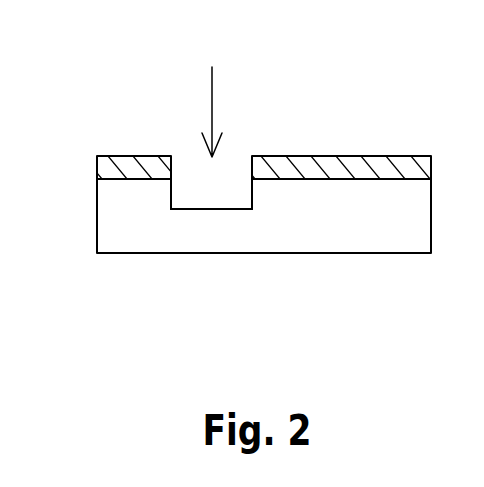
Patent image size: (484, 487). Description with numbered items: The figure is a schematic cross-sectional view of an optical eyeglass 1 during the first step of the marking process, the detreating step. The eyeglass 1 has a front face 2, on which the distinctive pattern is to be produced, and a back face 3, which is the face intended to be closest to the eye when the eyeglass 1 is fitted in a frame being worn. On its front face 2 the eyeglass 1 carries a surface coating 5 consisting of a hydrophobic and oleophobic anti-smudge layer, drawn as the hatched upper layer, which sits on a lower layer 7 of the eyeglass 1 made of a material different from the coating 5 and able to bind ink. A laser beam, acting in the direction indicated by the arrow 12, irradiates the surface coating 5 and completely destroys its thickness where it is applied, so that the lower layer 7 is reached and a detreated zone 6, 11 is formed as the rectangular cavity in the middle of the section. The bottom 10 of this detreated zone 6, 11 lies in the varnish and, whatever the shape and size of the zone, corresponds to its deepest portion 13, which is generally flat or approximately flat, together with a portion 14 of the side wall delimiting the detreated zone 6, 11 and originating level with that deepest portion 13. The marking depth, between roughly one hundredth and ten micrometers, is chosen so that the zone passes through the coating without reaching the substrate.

The optical eyeglass 1 is at (82, 141).
The front face 2 is at (127, 155).
The back face 3 is at (124, 256).
The surface coating 5 is at (329, 164).
The detreated zone 6 is at (234, 185).
The detreated zone 11 is at (231, 120).
The lower layer 7 is at (123, 203).
The bottom of the detreated zone 10 is at (256, 200).
The arrow 12 is at (210, 93).
The deepest portion 13 is at (201, 210).
The portion of the side wall 14 is at (170, 193).